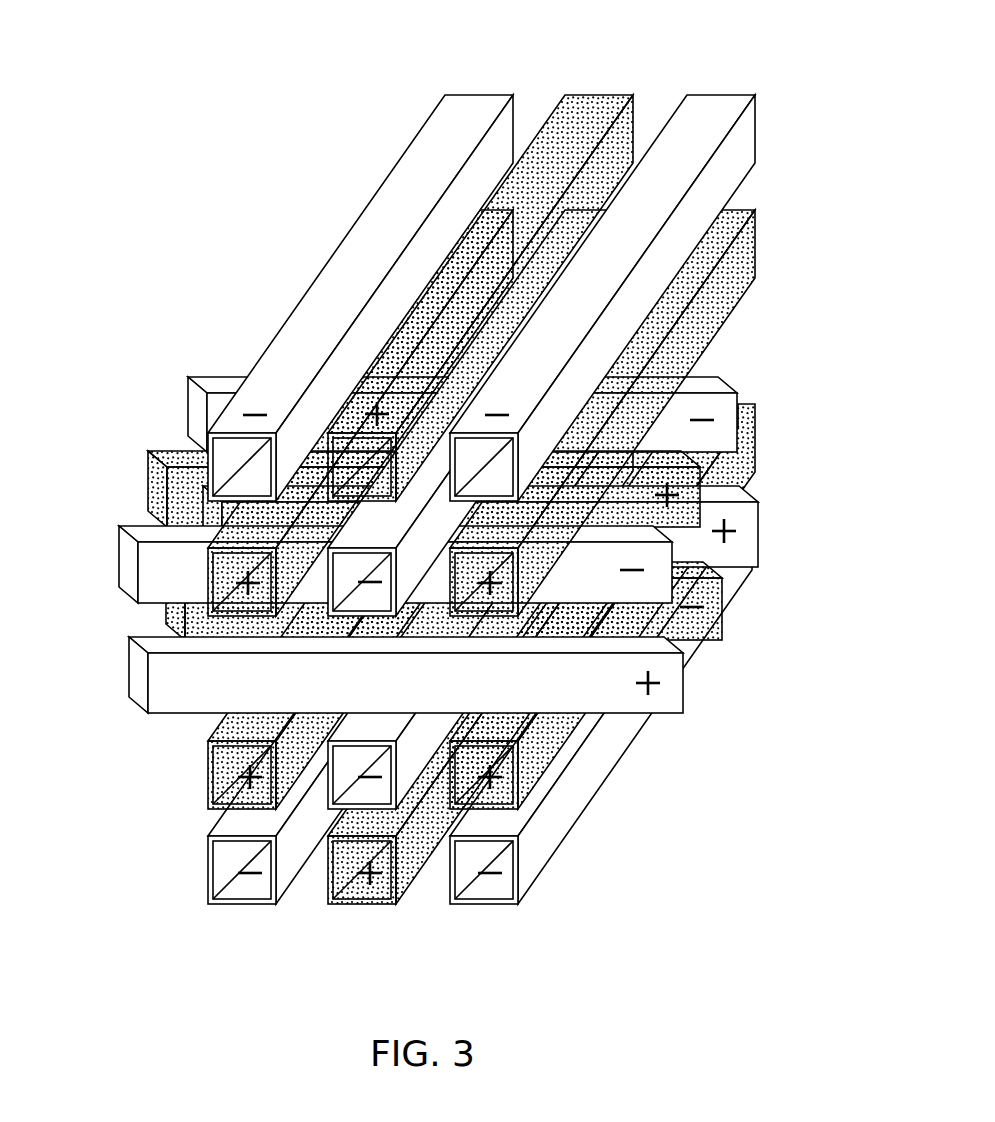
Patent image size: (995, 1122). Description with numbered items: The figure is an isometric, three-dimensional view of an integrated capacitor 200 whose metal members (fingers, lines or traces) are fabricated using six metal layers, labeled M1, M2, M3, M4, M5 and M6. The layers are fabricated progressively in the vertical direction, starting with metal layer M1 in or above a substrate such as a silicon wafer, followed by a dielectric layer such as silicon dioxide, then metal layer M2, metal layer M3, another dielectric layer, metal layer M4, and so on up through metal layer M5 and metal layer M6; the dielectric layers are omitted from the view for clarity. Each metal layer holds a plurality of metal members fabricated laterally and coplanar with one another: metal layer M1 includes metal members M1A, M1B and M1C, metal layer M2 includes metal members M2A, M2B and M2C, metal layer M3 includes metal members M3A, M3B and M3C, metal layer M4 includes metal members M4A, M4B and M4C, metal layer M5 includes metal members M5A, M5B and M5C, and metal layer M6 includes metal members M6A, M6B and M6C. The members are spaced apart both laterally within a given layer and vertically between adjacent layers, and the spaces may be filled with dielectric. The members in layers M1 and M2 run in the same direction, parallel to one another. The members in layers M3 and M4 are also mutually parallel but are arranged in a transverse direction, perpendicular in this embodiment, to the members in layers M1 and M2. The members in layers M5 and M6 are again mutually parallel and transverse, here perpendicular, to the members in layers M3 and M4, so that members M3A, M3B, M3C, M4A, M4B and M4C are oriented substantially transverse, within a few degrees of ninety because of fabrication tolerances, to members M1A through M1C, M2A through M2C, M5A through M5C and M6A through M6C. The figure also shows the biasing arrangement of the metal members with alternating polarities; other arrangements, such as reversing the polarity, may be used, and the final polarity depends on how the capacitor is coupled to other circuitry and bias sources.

The integrated capacitor 200 is at (437, 498).
The metal layer M1 is at (449, 733).
The metal member M1A is at (245, 888).
The metal member M1B is at (362, 890).
The metal member M1C is at (490, 890).
The metal layer M2 is at (432, 670).
The metal member M2A is at (233, 729).
The metal member M2B is at (480, 606).
The metal member M2C is at (502, 790).
The metal layer M3 is at (489, 639).
The metal member M3A is at (426, 717).
The metal member M3B is at (707, 618).
The metal member M3C is at (742, 512).
The metal layer M4 is at (454, 594).
The metal member M4A is at (597, 582).
The metal member M4B is at (683, 478).
The metal member M4C is at (703, 403).
The metal layer M5 is at (436, 427).
The metal member M5A is at (217, 533).
The metal member M5B is at (480, 413).
The metal member M5C is at (720, 297).
The metal layer M6 is at (514, 264).
The metal member M6A is at (475, 108).
The metal member M6B is at (597, 108).
The metal member M6C is at (713, 108).